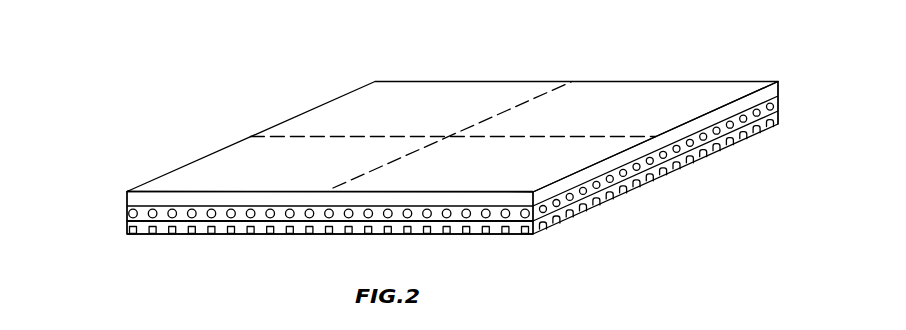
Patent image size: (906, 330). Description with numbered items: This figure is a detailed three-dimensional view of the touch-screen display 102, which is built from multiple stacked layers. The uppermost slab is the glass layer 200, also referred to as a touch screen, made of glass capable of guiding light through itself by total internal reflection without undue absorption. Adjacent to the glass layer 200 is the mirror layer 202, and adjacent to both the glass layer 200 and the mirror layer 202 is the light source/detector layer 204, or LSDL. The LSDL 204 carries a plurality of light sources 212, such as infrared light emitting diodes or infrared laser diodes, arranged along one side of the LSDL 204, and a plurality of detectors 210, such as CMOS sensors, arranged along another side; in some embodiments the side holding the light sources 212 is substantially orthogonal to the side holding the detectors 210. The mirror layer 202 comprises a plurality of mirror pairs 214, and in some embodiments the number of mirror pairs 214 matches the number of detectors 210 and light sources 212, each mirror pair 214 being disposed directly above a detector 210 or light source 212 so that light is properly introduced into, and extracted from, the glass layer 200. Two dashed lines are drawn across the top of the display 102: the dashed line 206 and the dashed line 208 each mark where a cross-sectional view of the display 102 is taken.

The display 102 is at (624, 220).
The glass layer 200 is at (120, 208).
The mirror layer 202 is at (781, 101).
The light source/detector layer 204 is at (120, 222).
The dashed line 206 is at (277, 135).
The dashed line 208 is at (543, 95).
The detectors 210 is at (329, 234).
The light sources 212 is at (677, 163).
The mirror pairs 214 is at (555, 205).